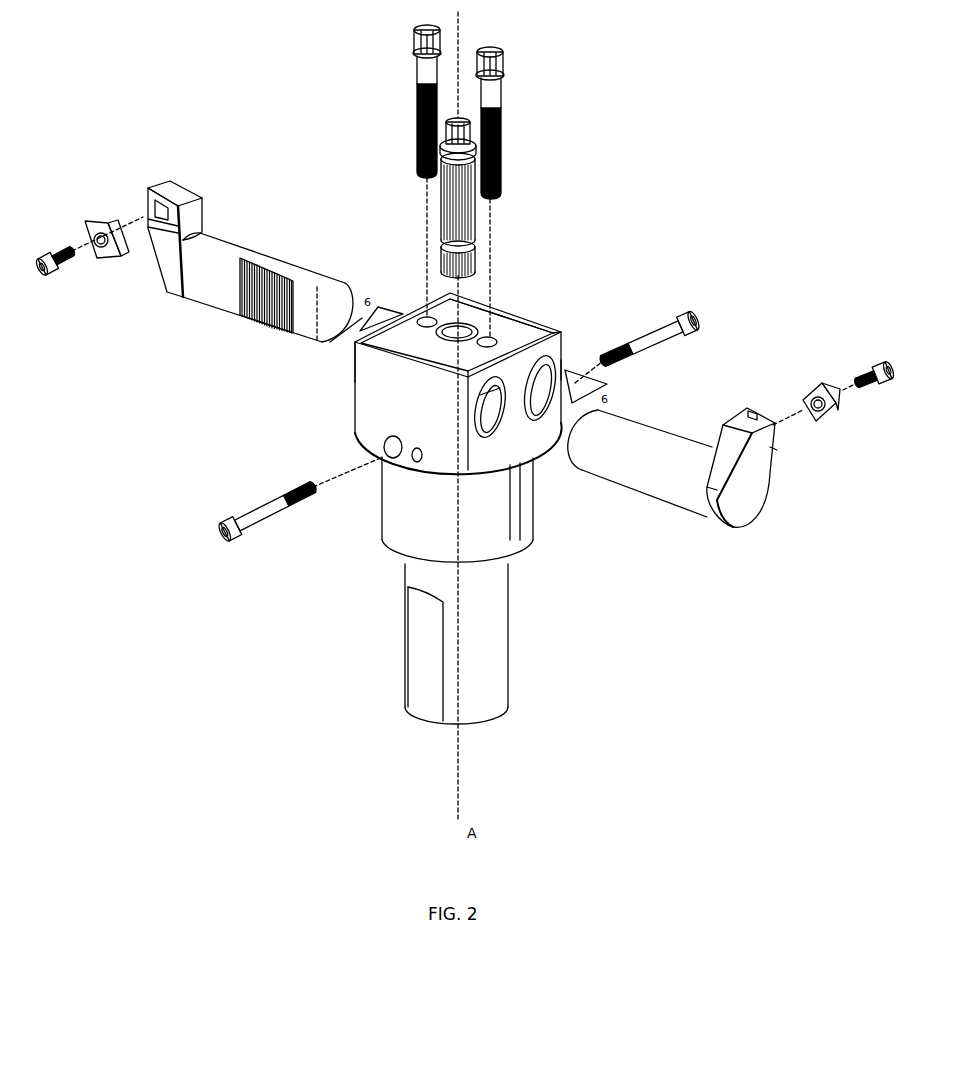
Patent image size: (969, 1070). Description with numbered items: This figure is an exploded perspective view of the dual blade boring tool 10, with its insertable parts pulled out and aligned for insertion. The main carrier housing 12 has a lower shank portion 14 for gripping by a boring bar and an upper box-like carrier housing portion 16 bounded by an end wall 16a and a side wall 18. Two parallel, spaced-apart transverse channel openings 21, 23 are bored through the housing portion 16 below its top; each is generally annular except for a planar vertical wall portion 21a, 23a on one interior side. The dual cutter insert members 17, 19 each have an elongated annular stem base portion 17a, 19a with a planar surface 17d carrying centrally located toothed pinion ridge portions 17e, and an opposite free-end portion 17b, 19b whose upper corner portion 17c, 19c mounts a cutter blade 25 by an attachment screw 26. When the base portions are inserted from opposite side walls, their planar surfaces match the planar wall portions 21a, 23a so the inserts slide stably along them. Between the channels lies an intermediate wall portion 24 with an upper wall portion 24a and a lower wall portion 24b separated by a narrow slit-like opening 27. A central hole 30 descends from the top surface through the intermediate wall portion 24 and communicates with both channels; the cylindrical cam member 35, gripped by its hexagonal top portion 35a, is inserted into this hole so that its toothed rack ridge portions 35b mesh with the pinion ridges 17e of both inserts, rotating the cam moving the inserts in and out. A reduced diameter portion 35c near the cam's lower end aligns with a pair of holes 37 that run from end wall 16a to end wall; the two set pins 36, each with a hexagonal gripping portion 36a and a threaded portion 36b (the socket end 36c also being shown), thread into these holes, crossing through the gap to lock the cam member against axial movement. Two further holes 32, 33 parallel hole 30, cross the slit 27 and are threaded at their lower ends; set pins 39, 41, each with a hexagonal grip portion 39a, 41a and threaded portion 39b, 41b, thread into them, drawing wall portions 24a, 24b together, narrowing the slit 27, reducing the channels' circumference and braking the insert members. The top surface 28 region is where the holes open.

The dual blade boring tool 10 is at (443, 487).
The main carrier housing 12 is at (440, 508).
The lower shank portion 14 is at (496, 644).
The carrier housing portion 16 is at (443, 362).
The end wall 16a is at (322, 367).
The dual cutter insert member 17 is at (250, 249).
The stem base portion 17a is at (268, 277).
The free-end portion 17b is at (214, 215).
The upper corner portion 17c is at (182, 183).
The planar surface 17d is at (240, 321).
The toothed pinion ridge portions 17e is at (260, 311).
The side wall 18 is at (545, 497).
The dual cutter insert member 19 is at (706, 457).
The stem base portion 19a is at (640, 463).
The free-end portion 19b is at (776, 444).
The upper corner portion 19c is at (748, 390).
The transverse channel opening 21 is at (578, 359).
The planar vertical wall portion 21a is at (536, 399).
The transverse channel opening 23 is at (467, 416).
The planar vertical wall portion 23a is at (497, 421).
The intermediate wall portion 24 is at (559, 315).
The upper wall portion 24a is at (478, 364).
The lower wall portion 24b is at (458, 390).
The cutter blade 25 is at (464, 297).
The attachment screw 26 is at (464, 317).
The slit-like opening 27 is at (539, 394).
The top surface 28 is at (501, 305).
The hole 30 is at (488, 300).
The hole 32 is at (409, 289).
The hole 33 is at (503, 336).
The cam member 35 is at (467, 181).
The hexagonal shaped top portion 35a is at (458, 122).
The toothed rack ridge portions 35b is at (502, 199).
The reduced diameter portion 35c is at (499, 252).
The set pin 36 is at (446, 418).
The hexagonal shaped gripping portion 36a is at (471, 403).
The threaded portion 36b is at (450, 424).
The bolt socket 36c is at (432, 443).
The hole 37 is at (401, 434).
The set pin 39 is at (385, 100).
The hexagonal shaped grip portion 39a is at (392, 40).
The threaded circumferential portion 39b is at (383, 131).
The set pin 41 is at (529, 115).
The hexagonal shaped grip portion 41a is at (529, 56).
The threaded circumferential portion 41b is at (529, 153).